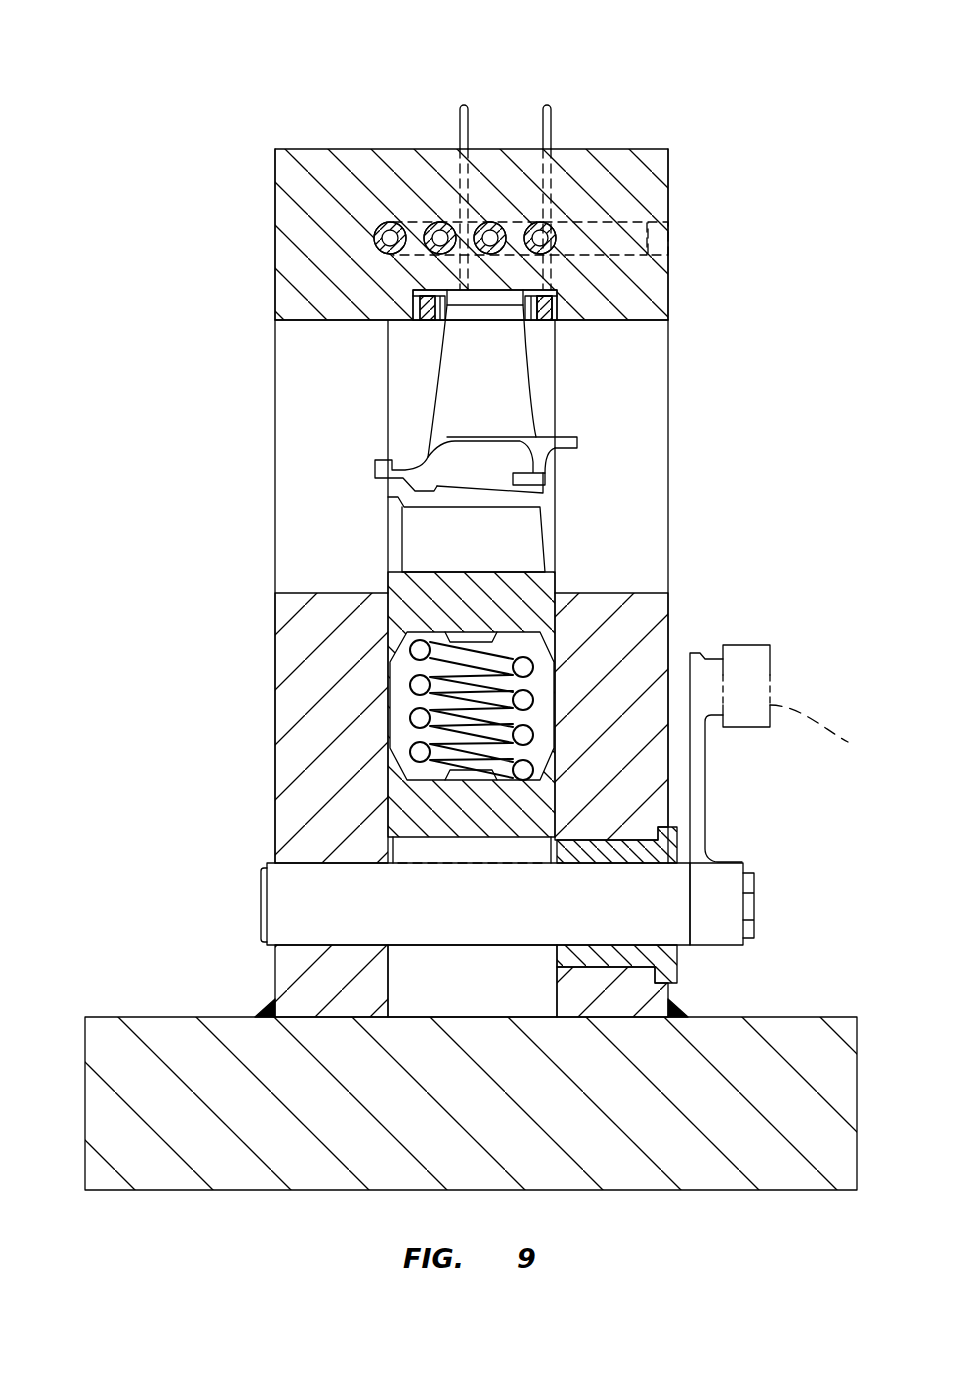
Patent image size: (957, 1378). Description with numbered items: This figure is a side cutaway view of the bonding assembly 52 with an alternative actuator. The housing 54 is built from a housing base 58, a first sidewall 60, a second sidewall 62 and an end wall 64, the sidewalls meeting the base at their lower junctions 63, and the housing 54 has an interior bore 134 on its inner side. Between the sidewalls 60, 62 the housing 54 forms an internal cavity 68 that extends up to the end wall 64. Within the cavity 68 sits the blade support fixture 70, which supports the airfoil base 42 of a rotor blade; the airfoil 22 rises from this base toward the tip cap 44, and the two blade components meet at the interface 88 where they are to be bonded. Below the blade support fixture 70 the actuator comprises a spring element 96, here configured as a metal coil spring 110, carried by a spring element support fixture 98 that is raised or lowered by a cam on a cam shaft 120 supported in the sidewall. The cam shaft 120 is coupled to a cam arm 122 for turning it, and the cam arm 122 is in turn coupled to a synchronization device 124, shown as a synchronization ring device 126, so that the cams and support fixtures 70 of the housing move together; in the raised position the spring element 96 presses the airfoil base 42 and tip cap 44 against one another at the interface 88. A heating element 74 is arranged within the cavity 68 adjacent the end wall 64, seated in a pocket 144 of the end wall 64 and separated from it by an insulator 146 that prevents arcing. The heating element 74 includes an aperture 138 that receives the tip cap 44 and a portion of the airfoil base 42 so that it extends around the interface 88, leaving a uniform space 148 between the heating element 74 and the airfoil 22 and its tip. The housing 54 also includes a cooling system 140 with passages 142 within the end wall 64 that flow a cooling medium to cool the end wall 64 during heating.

The airfoil 22 is at (515, 391).
The airfoil base 42 is at (535, 341).
The tip cap 44 is at (492, 292).
The fixture assembly 52 is at (736, 104).
The housing 54 is at (307, 147).
The housing base 58 is at (86, 1068).
The housing first sidewall 60 is at (275, 978).
The housing second sidewall 62 is at (680, 1002).
The weld 63 is at (268, 1006).
The housing end wall 64 is at (652, 148).
The internal cavity 68 is at (405, 410).
The blade support fixture 70 is at (560, 545).
The heating element 74 is at (546, 104).
The interface 88 is at (476, 316).
The spring element 96 is at (345, 710).
The spring element support fixture 98 is at (385, 800).
The coil spring 110 is at (412, 708).
The cam shaft 120 is at (262, 904).
The cam arm 122 is at (710, 804).
The synchronization device 124 is at (771, 640).
The synchronization ring device 126 is at (838, 733).
The interior bore 134 is at (112, 697).
The aperture 138 is at (440, 336).
The cooling system 140 is at (672, 240).
The passages 142 is at (386, 222).
The pocket 144 is at (412, 300).
The insulator 146 is at (399, 291).
The uniform space 148 is at (575, 296).